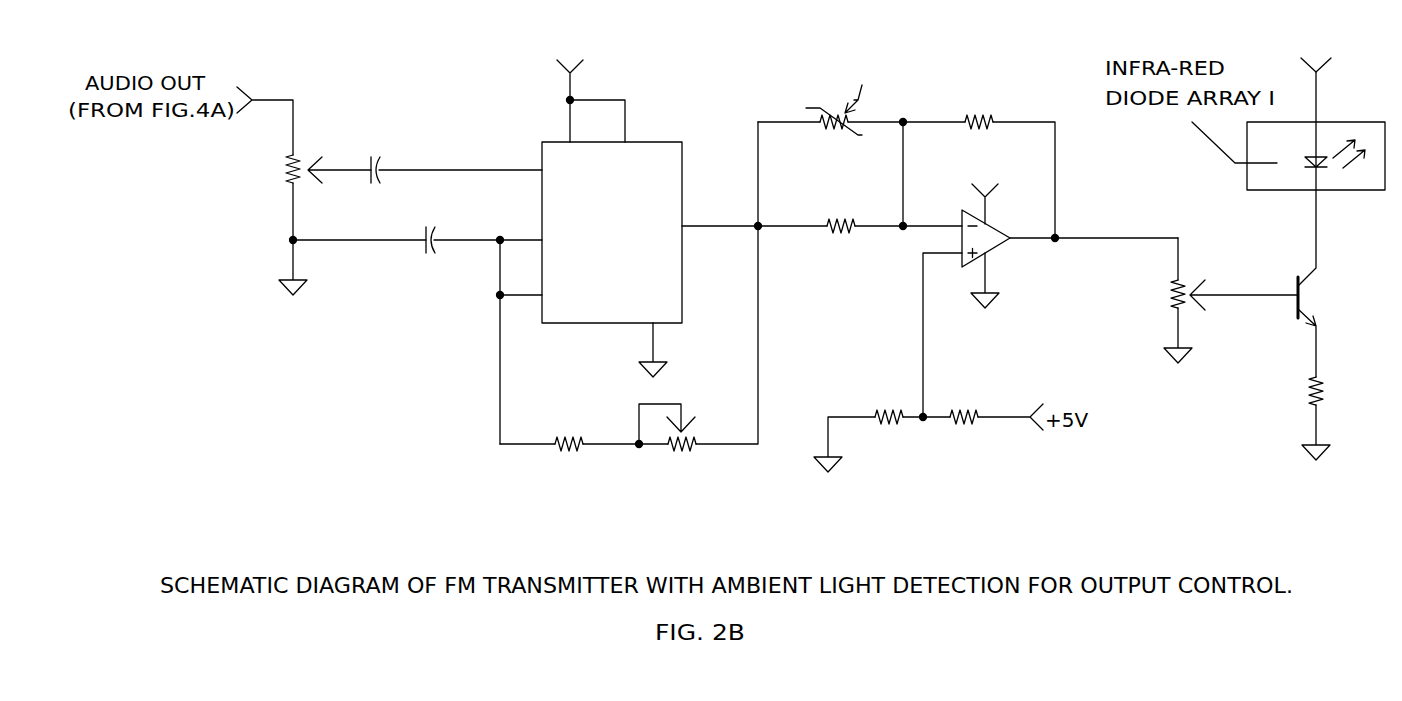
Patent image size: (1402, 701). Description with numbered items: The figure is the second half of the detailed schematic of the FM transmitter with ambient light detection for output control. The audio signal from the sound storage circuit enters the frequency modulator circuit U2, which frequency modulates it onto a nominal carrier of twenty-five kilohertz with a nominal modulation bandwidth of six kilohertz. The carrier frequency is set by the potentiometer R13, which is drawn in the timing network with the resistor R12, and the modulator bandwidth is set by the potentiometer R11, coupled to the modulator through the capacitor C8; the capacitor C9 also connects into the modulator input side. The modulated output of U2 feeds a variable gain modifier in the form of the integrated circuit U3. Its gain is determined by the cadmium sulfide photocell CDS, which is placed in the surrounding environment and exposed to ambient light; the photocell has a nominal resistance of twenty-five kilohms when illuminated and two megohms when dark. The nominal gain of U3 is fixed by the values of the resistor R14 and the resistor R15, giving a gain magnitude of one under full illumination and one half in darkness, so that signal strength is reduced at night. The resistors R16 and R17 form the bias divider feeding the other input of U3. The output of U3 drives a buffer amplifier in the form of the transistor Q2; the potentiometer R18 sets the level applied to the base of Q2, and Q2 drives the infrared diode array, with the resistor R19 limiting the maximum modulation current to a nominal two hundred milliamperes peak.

The potentiometer R11 is at (254, 188).
The capacitor 0.1 C8 is at (453, 173).
The capacitor 0.001 C9 is at (434, 240).
The frequency modulator circuit U2 is at (637, 205).
The resistor 24K 1% R12 is at (594, 447).
The potentiometer R13 is at (675, 467).
The resistor R14 is at (860, 228).
The resistor R15 is at (982, 124).
The resistor 12K R16 is at (891, 418).
The resistor 12K R17 is at (966, 418).
The integrated circuit U3 is at (1050, 289).
The potentiometer R18 is at (1205, 300).
The resistor R19 is at (1290, 414).
The transistor Q2 is at (1350, 201).
The cadmium sulfide photocell CDS is at (821, 88).